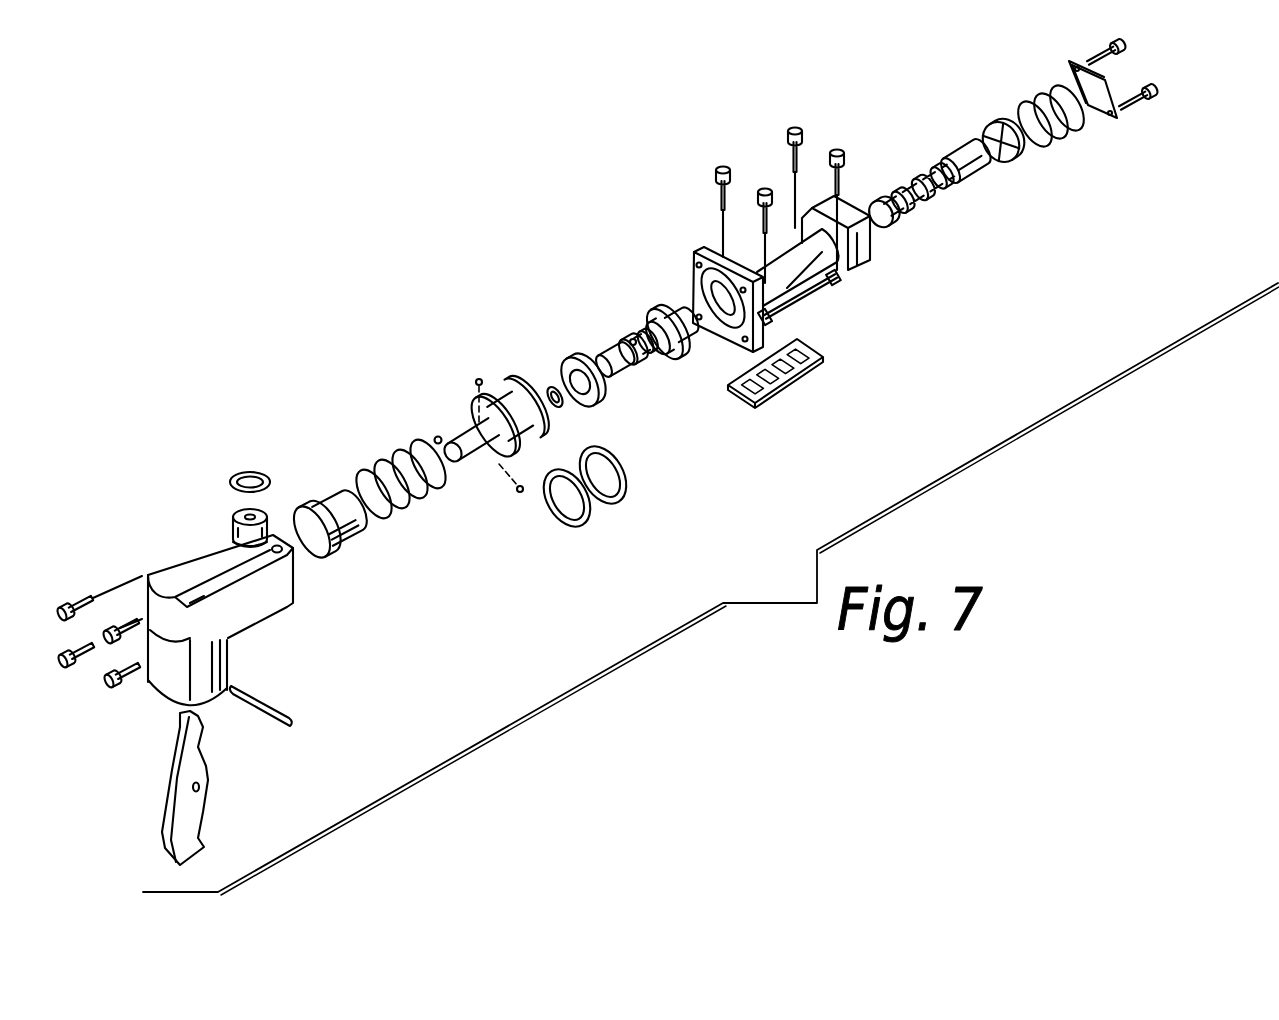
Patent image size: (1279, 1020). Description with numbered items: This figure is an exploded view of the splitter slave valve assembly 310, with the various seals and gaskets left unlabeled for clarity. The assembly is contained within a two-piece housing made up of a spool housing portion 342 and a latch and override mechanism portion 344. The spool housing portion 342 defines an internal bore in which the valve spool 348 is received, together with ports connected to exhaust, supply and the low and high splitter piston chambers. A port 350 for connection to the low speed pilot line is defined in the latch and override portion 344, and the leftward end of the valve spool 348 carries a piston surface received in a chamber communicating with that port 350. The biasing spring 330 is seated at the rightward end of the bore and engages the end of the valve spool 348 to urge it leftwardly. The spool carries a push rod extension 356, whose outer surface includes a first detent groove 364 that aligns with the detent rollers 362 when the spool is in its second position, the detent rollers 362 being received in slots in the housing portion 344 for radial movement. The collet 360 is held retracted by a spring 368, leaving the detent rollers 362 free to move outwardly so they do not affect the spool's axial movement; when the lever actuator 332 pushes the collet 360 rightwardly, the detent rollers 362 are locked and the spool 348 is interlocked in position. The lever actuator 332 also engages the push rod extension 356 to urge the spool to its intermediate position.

The splitter slave valve assembly 310 is at (365, 351).
The biasing spring 330 is at (1040, 97).
The lever actuator 332 is at (198, 802).
The spool housing portion 342 is at (803, 270).
The latch and override mechanism portion 344 is at (237, 608).
The valve spool 348 is at (940, 165).
The port 350 is at (235, 531).
The push rod extension 356 is at (664, 356).
The collet 360 is at (330, 493).
The detent roller 362 is at (477, 379).
The first detent groove 364 is at (622, 340).
The spring 368 is at (412, 500).